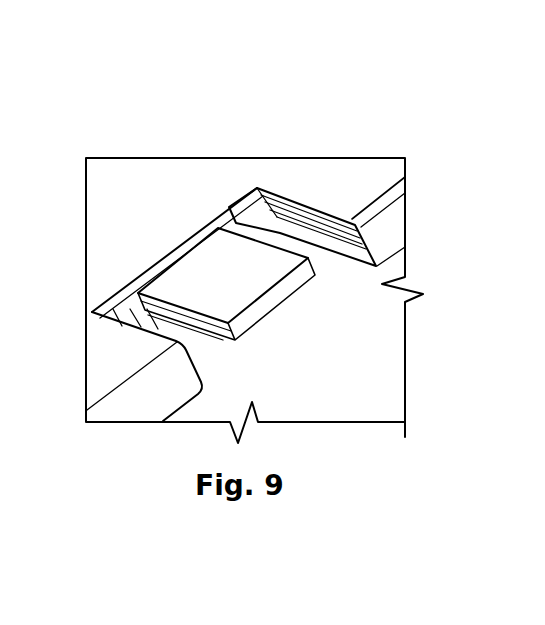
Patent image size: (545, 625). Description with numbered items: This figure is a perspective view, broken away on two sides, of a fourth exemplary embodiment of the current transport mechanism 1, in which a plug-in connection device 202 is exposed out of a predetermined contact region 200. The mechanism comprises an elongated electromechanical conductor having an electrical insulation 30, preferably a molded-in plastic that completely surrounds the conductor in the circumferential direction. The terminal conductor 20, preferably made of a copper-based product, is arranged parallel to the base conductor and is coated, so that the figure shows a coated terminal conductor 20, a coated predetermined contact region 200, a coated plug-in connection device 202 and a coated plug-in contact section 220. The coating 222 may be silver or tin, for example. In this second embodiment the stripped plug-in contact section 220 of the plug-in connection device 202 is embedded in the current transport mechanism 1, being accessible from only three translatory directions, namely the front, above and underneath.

The current transport mechanism 1 is at (86, 127).
The electrical insulation 30 is at (363, 183).
The terminal conductor 20 is at (371, 255).
The predetermined contact region 200 is at (327, 300).
The plug-in connection device 202 is at (327, 300).
The plug-in contact section 220 is at (273, 295).
The coating 222 is at (252, 234).